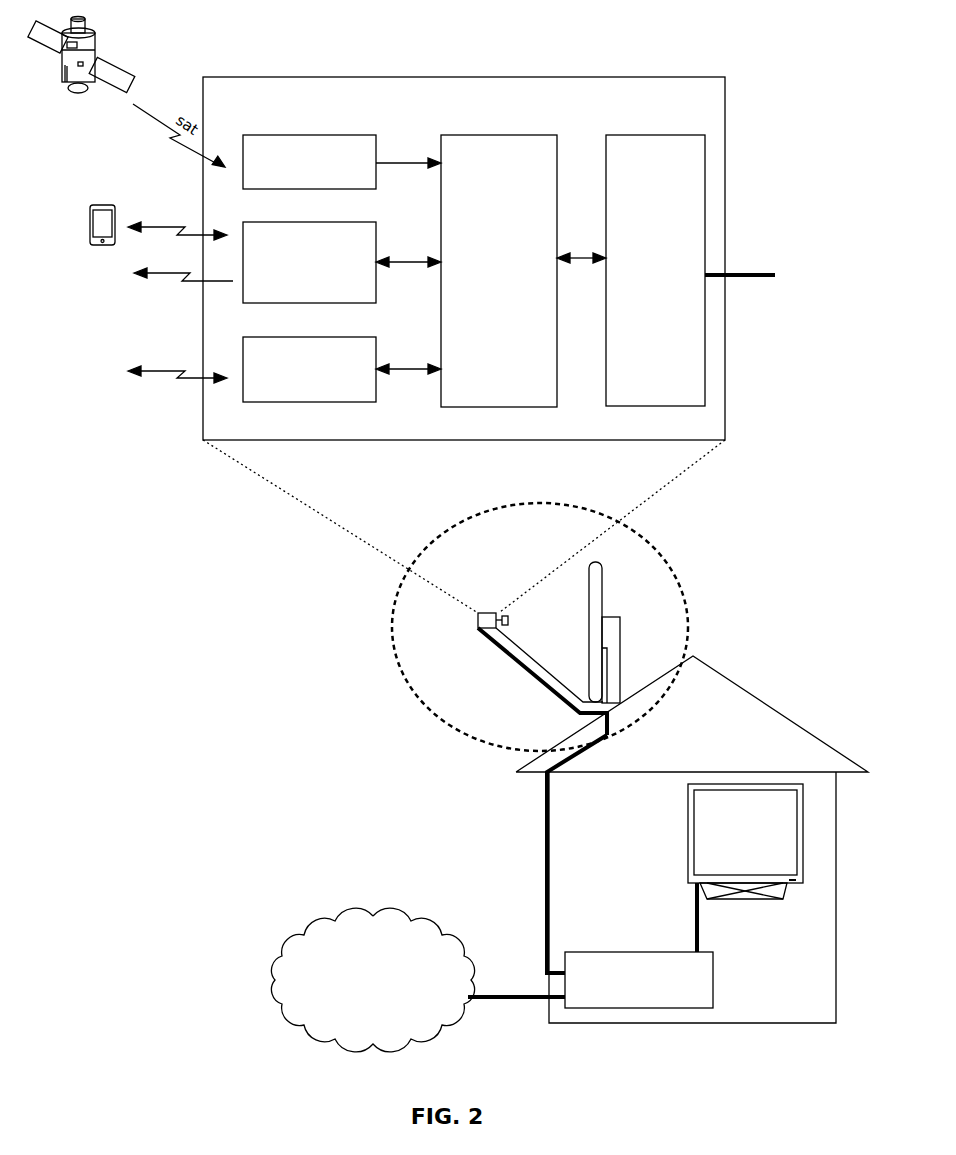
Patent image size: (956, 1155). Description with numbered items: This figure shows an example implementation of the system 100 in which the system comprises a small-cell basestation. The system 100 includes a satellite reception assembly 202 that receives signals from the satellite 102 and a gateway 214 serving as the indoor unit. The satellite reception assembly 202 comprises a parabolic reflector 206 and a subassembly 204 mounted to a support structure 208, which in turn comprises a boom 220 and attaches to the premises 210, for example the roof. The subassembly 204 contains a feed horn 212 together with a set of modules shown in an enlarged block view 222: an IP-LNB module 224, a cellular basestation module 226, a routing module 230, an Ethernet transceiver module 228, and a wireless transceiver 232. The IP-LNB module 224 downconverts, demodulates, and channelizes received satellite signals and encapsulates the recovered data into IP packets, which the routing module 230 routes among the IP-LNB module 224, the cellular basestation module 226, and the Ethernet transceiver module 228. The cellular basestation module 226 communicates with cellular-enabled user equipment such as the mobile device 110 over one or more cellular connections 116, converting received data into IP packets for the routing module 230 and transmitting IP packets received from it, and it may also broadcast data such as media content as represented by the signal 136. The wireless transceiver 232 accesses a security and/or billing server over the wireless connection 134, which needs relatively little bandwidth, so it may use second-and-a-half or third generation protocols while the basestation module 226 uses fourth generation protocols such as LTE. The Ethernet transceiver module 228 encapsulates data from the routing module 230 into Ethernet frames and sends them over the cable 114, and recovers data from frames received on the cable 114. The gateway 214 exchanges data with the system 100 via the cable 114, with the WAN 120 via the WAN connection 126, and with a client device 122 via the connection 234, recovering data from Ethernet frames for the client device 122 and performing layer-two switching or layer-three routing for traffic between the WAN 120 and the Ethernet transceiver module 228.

The system 100 is at (684, 590).
The satellite 102 is at (95, 36).
The mobile device 110 is at (102, 244).
The cable 114 is at (748, 274).
The connection 116 is at (175, 226).
The wide area network (WAN) 120 is at (359, 1000).
The client device 122 is at (686, 836).
The WAN connection 126 is at (506, 995).
The wireless connection 134 is at (175, 369).
The broadcast signal 136 is at (180, 272).
The satellite reception assembly 202 is at (510, 574).
The subassembly 204 is at (478, 627).
The parabolic reflector 206 is at (604, 592).
The support structure 208 is at (621, 646).
The premises 210 is at (783, 716).
The feed horn 212 is at (510, 621).
The gateway 214 is at (625, 998).
The boom 220 is at (538, 666).
The outdoor unit block diagram 222 is at (449, 111).
The IP-LNB module 224 is at (296, 180).
The cellular basestation module 226 is at (296, 289).
The Ethernet transceiver module 228 is at (641, 296).
The routing module 230 is at (485, 288).
The wireless transceiver 232 is at (296, 387).
The connection 234 is at (693, 919).